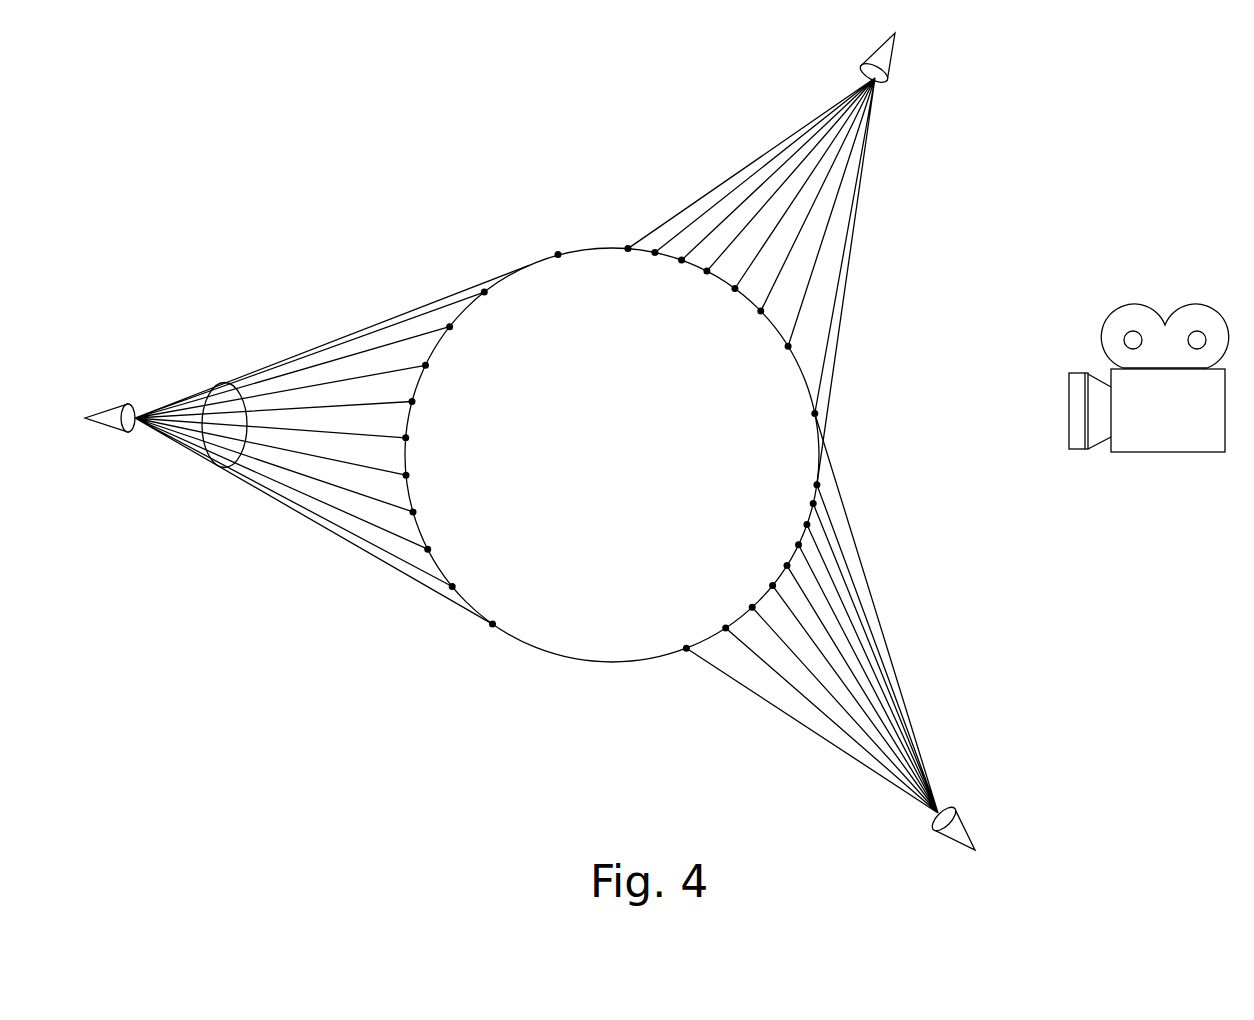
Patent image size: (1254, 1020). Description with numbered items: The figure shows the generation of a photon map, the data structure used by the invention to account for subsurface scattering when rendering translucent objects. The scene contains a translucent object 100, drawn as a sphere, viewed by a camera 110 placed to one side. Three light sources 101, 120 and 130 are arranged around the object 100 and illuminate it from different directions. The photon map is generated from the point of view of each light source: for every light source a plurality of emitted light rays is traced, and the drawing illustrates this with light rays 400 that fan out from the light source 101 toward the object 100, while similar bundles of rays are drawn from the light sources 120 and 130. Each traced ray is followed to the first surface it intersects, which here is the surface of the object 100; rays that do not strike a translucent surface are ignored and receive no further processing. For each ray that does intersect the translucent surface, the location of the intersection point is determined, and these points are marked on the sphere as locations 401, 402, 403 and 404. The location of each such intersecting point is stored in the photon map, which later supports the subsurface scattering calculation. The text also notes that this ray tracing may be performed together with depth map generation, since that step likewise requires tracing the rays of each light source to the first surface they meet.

The translucent object 100 is at (590, 662).
The light source 101 is at (116, 432).
The camera 110 is at (1148, 452).
The light source 120 is at (892, 62).
The light source 130 is at (967, 830).
The light rays 400 is at (222, 470).
The location 401 is at (494, 626).
The location 402 is at (453, 589).
The location 403 is at (558, 254).
The surface point 404 is at (820, 487).